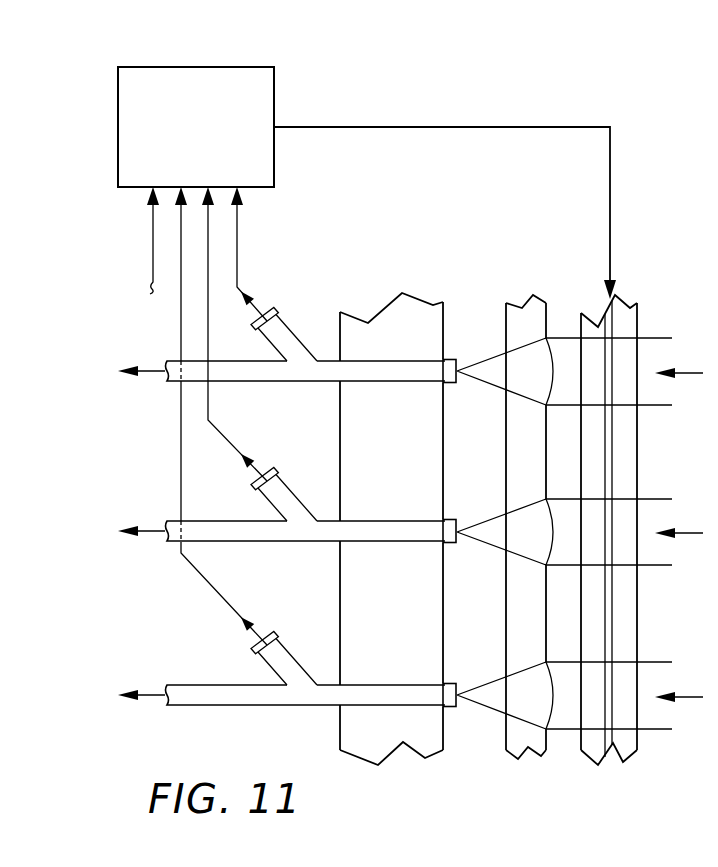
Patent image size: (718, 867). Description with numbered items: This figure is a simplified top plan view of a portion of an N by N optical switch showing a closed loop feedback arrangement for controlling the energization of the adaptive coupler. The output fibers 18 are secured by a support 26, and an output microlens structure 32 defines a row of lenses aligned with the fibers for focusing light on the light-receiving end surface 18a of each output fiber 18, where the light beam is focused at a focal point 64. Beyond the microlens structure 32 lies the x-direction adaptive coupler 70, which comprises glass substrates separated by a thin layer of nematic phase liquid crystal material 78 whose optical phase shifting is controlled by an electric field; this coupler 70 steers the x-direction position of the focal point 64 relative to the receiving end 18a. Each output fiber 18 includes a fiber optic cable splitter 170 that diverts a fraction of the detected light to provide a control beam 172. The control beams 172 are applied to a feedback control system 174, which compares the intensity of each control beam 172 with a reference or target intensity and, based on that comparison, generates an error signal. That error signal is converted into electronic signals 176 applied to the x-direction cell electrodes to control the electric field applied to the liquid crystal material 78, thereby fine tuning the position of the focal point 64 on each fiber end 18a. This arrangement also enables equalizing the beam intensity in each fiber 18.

The feedback control system 174 is at (203, 67).
The electronic signals 176 is at (500, 127).
The control beam 172 is at (237, 266).
The fiber optic cable splitter 170 is at (293, 332).
The output fiber 18 is at (386, 383).
The light-receiving end surface 18a is at (460, 367).
The focal point 64 is at (460, 375).
The support 26 is at (352, 758).
The output microlens structure 32 is at (511, 754).
The x-direction adaptive coupler 70 is at (649, 288).
The layer of nematic phase liquid crystal material 78 is at (613, 477).